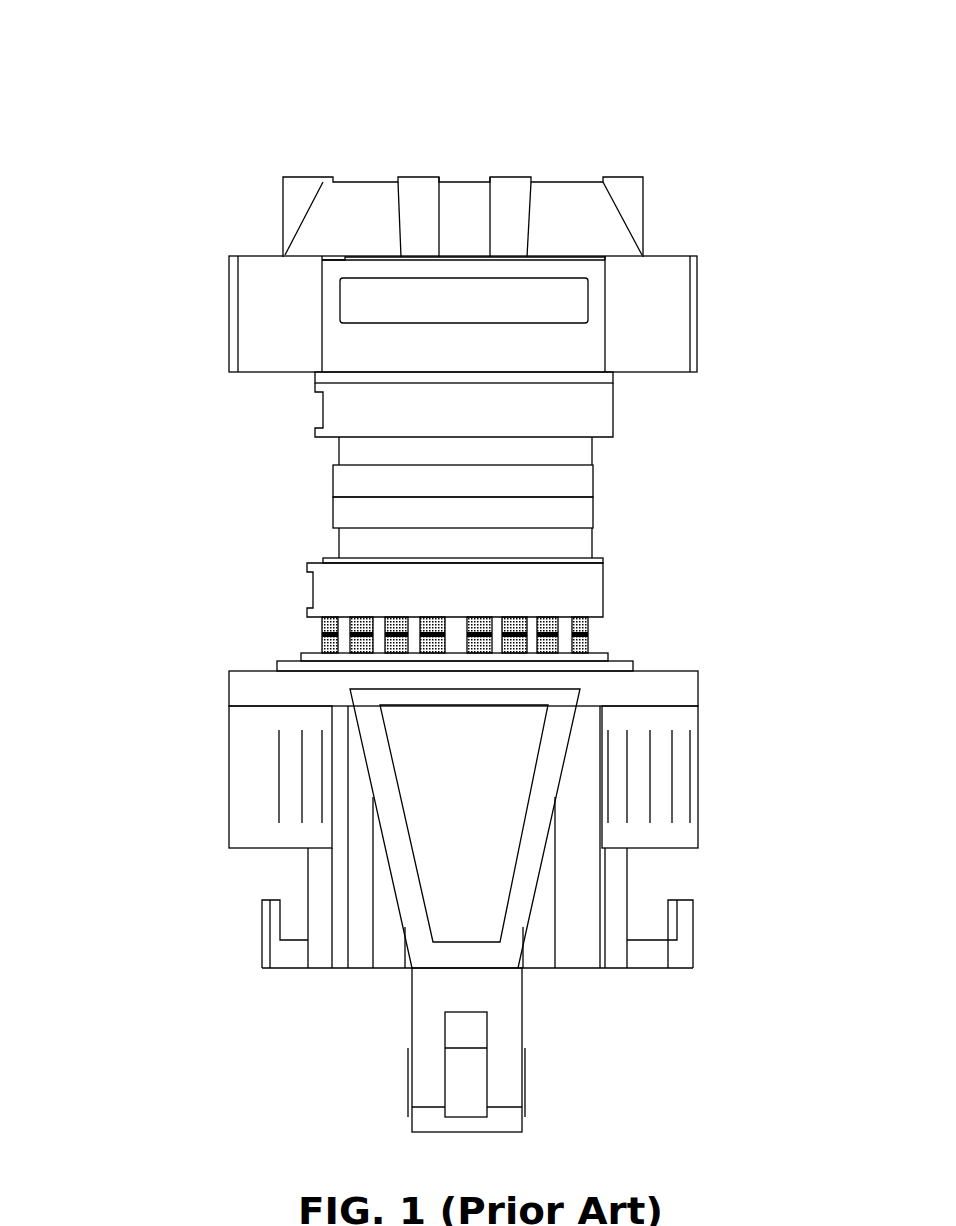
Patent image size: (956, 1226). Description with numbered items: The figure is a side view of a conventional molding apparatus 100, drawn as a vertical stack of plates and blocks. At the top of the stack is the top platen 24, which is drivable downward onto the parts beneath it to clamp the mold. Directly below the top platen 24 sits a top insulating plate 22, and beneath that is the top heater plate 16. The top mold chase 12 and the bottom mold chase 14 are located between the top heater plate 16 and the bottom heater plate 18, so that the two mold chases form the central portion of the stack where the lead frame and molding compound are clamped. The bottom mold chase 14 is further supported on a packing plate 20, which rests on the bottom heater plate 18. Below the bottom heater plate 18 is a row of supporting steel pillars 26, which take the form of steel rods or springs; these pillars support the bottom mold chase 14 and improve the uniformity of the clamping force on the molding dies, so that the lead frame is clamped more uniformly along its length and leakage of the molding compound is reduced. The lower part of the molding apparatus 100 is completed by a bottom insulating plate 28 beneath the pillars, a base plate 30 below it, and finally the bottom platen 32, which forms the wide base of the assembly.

The molding apparatus 100 is at (796, 87).
The top platen 24 is at (233, 292).
The top insulating plate 22 is at (595, 367).
The top heater plate 16 is at (301, 408).
The top mold chase 12 is at (577, 463).
The bottom mold chase 14 is at (594, 518).
The packing plate 20 is at (307, 547).
The bottom heater plate 18 is at (293, 579).
The supporting steel pillars 26 is at (287, 642).
The bottom insulating plate 28 is at (299, 672).
The base plate 30 is at (349, 684).
The bottom platen 32 is at (354, 968).